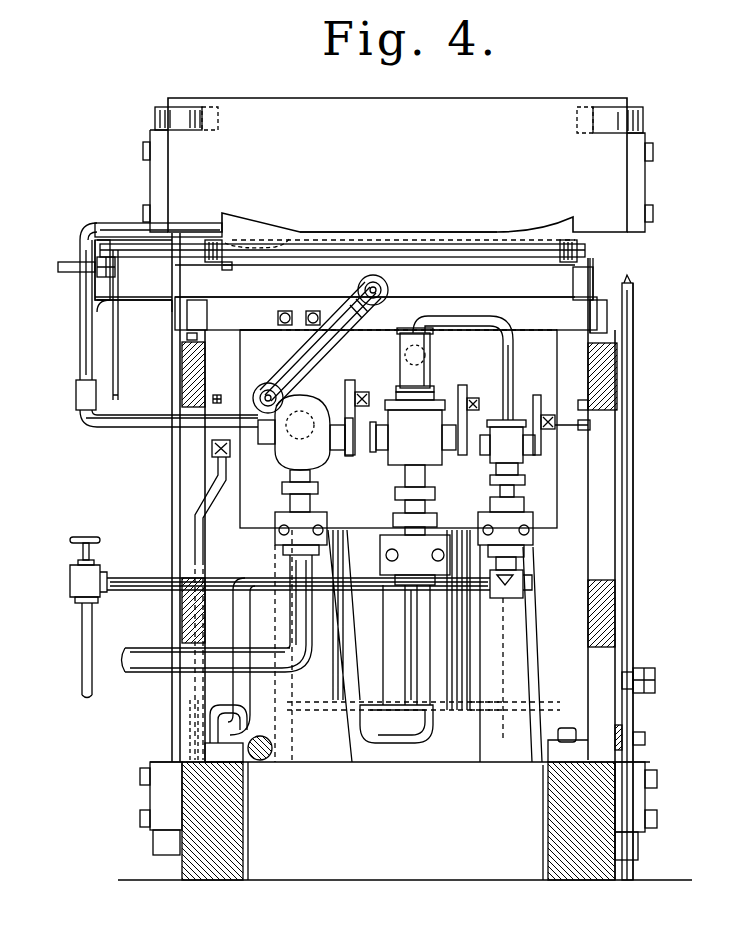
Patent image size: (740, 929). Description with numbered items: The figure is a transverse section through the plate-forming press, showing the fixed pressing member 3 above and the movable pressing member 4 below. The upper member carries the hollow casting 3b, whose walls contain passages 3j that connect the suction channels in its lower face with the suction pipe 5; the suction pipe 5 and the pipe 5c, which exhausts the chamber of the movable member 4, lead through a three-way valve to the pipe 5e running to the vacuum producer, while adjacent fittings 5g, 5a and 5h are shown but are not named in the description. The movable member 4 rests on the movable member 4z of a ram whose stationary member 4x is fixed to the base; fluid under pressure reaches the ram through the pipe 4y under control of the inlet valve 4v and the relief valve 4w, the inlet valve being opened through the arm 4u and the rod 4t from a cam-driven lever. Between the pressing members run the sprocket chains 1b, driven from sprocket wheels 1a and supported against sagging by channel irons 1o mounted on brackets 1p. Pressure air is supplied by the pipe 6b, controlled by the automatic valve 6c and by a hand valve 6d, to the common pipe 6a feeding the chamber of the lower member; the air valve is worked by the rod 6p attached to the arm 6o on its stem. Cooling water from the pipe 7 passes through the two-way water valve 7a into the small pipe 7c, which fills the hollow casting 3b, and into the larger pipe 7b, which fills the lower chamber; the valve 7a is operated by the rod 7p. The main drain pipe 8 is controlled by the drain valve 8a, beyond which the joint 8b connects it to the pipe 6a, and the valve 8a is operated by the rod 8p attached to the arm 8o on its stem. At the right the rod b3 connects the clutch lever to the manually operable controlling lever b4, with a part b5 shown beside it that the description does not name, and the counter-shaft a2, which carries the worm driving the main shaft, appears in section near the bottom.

The fixed pressing member 3 is at (398, 169).
The passages 3j is at (262, 245).
The casting 3b is at (336, 240).
The sprocket wheels 1a is at (585, 268).
The channel irons 1o is at (205, 270).
The sprocket chains 1b is at (228, 268).
The brackets 1p is at (205, 318).
The movable pressing member 4 is at (405, 556).
The pipe 7b is at (300, 357).
The rod 7p is at (357, 417).
The water valve 7a is at (305, 475).
The pipe 7c is at (82, 322).
The water pipe 7 is at (150, 662).
The elbow 5g is at (92, 230).
The pipe 5e is at (62, 262).
The suction pipe 5 is at (148, 246).
The nut 5a is at (112, 270).
The pipe 5c is at (148, 305).
The valve rod 5h is at (118, 362).
The common pipe 6a is at (430, 360).
The pipe 6b is at (452, 320).
The joint 8b is at (395, 398).
The drain valve 8a is at (400, 440).
The rod 8p is at (466, 390).
The main drain pipe 8 is at (415, 632).
The valve 6c is at (500, 452).
The arm 8o is at (503, 425).
The arm 6o is at (520, 408).
The rod 6p is at (572, 430).
The rod 4t is at (210, 450).
The arm 4u is at (210, 482).
The pipe 4y is at (240, 622).
The relief valve 4w is at (178, 708).
The inlet valve 4v is at (178, 745).
The counter-shaft a2 is at (272, 745).
The movable member of ram 4z is at (378, 705).
The stationary member of ram 4x is at (470, 705).
The hand valve 6d is at (70, 580).
The controlling lever b4 is at (634, 476).
The rod b3 is at (648, 676).
The collar b5 is at (645, 740).